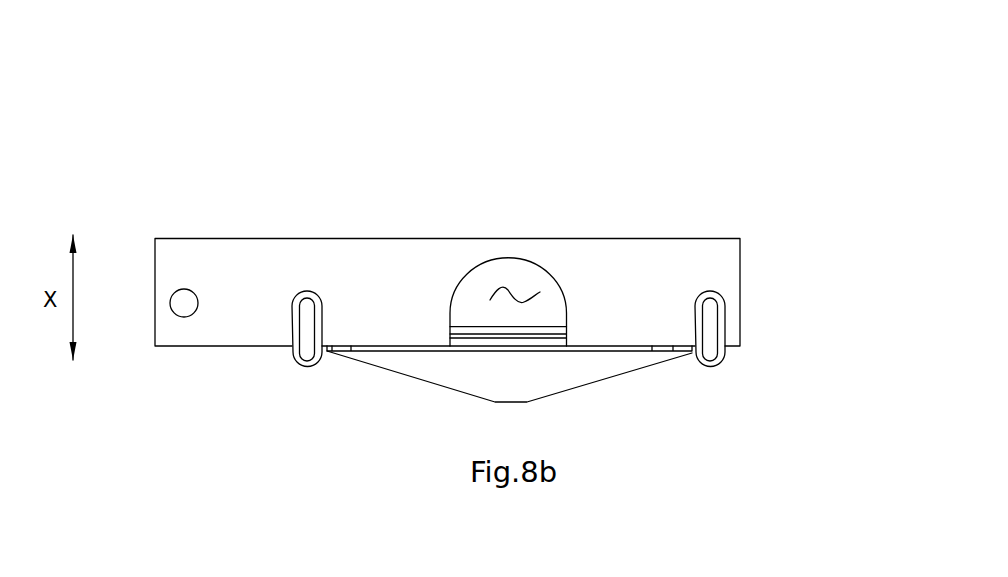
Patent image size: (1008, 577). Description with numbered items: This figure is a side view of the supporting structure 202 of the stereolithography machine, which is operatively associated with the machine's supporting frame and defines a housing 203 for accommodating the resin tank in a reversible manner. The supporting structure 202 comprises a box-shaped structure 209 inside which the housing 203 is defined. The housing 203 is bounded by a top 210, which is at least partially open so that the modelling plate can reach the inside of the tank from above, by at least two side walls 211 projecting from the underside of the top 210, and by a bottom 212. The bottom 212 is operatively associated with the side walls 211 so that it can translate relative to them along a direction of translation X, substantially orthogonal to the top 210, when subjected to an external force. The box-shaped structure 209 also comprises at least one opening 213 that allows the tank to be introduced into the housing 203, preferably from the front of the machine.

The supporting structure 202 is at (518, 228).
The box-shaped structure 209 is at (518, 268).
The top 210 is at (605, 240).
The housing 203 is at (517, 292).
The side walls 211 is at (629, 309).
The bottom 212 is at (477, 329).
The opening 213 is at (788, 329).